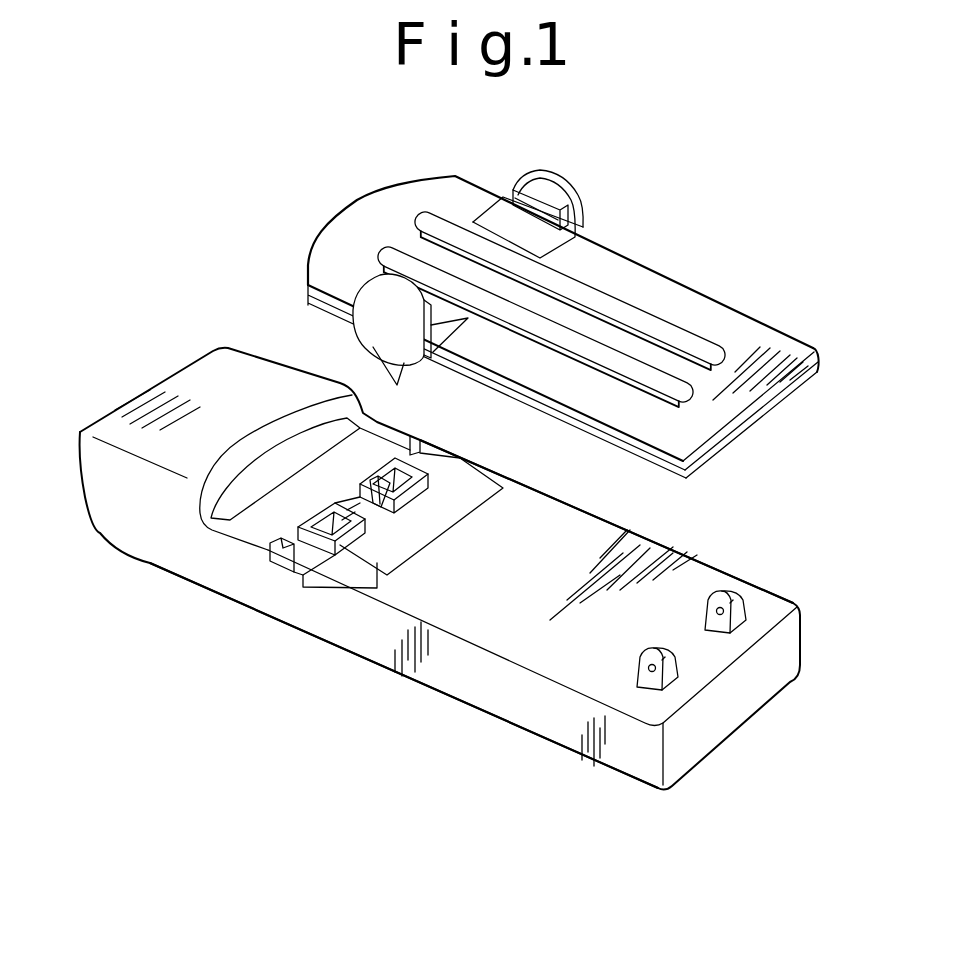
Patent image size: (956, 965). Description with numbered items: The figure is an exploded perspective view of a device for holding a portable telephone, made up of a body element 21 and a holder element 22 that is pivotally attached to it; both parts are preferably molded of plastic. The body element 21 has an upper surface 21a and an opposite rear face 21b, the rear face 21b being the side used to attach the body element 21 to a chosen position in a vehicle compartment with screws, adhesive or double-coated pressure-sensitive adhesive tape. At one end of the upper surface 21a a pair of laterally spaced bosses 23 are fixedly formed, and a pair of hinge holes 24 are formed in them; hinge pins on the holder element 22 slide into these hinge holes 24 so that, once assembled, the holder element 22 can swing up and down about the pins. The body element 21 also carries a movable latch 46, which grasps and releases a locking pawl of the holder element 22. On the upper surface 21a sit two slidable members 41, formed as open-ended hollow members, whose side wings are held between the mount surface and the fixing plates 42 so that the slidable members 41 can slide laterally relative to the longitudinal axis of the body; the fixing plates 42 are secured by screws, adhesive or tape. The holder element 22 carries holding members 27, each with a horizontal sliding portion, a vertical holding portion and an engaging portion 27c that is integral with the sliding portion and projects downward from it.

The body element 21 is at (150, 368).
The upper surface 21a is at (570, 530).
The rear face 21b is at (503, 722).
The holder element 22 is at (742, 300).
The bosses 23 is at (748, 600).
The hinge holes 24 is at (722, 620).
The holding members 27 is at (575, 187).
The engaging portion 27c is at (371, 373).
The slidable members 41 is at (303, 575).
The fixing plates 42 is at (440, 518).
The movable latch 46 is at (388, 500).